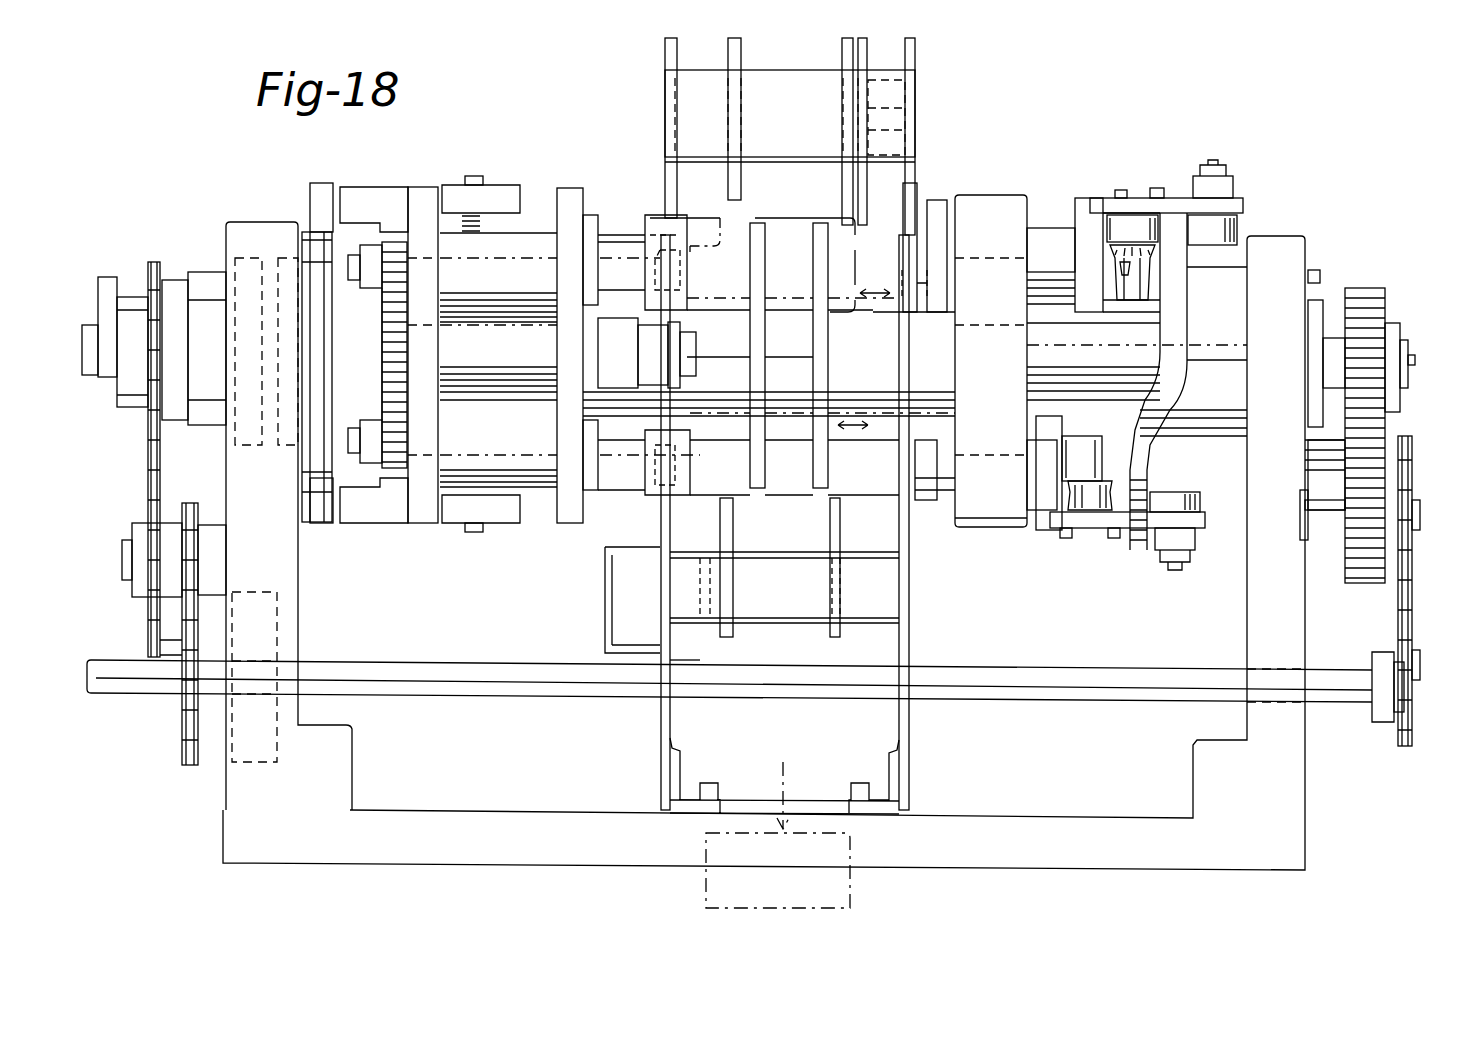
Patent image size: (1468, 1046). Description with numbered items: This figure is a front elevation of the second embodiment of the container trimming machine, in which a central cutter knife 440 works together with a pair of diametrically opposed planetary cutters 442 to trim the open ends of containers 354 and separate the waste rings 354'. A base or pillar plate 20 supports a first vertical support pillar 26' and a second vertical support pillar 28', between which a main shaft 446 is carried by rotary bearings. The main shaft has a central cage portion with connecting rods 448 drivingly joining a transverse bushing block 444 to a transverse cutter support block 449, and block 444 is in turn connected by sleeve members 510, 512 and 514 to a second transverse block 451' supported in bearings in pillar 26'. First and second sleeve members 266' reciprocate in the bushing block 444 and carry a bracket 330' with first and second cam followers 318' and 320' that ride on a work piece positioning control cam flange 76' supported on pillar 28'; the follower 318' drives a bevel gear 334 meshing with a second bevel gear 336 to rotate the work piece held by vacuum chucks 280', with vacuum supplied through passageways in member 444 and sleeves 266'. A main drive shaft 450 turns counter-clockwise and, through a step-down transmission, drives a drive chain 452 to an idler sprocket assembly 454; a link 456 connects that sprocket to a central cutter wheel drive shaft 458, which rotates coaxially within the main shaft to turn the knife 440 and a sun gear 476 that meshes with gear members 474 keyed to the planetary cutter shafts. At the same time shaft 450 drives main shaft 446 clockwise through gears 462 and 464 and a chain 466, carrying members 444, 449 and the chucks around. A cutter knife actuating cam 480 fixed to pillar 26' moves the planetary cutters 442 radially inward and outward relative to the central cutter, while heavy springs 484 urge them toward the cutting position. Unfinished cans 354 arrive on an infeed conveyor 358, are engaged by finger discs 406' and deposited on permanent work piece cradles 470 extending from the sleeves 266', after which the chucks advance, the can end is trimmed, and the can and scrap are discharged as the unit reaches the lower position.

The pillar plate 20 is at (968, 856).
The first vertical support pillar 26' is at (295, 510).
The second vertical support pillar 28' is at (1306, 660).
The main drive shaft 450 is at (1112, 672).
The drive chain 452 is at (148, 492).
The idler sprocket assembly 454 is at (168, 280).
The link 456 is at (116, 262).
The central cutter wheel drive shaft 458 is at (90, 375).
The cutter knife actuating cam 480 is at (312, 222).
The gear members 474 is at (362, 523).
The sun gear 476 is at (398, 322).
The second transverse block 451' is at (426, 550).
The heavy springs 484 is at (473, 205).
The transverse bushing block 444 is at (410, 205).
The sleeve member 510 is at (498, 275).
The sleeve member 512 is at (498, 357).
The sleeve member 514 is at (498, 443).
The transverse cutter support block 449 is at (573, 380).
The planetary cutters 442 is at (680, 458).
The central cutter knife 440 is at (690, 385).
The infeed conveyor 358 is at (940, 96).
The containers 354 is at (752, 241).
The vacuum chucks 280' is at (792, 485).
The work piece cradles 470 is at (875, 318).
The finger discs 406' is at (808, 359).
The connecting rods 448 is at (918, 398).
The sleeve members 266' is at (1011, 381).
The main shaft 446 is at (1137, 351).
The second bevel gear 336 is at (1112, 265).
The first cam follower 318' is at (1109, 358).
The bevel gear 334 is at (1150, 265).
The work piece positioning control cam flange 76' is at (1184, 381).
The bracket 330' is at (1186, 367).
The second cam follower 320' is at (1194, 354).
The gear 462 is at (1365, 288).
The gear 464 is at (1358, 583).
The chain 466 is at (1440, 580).
The waste rings 354' is at (822, 837).